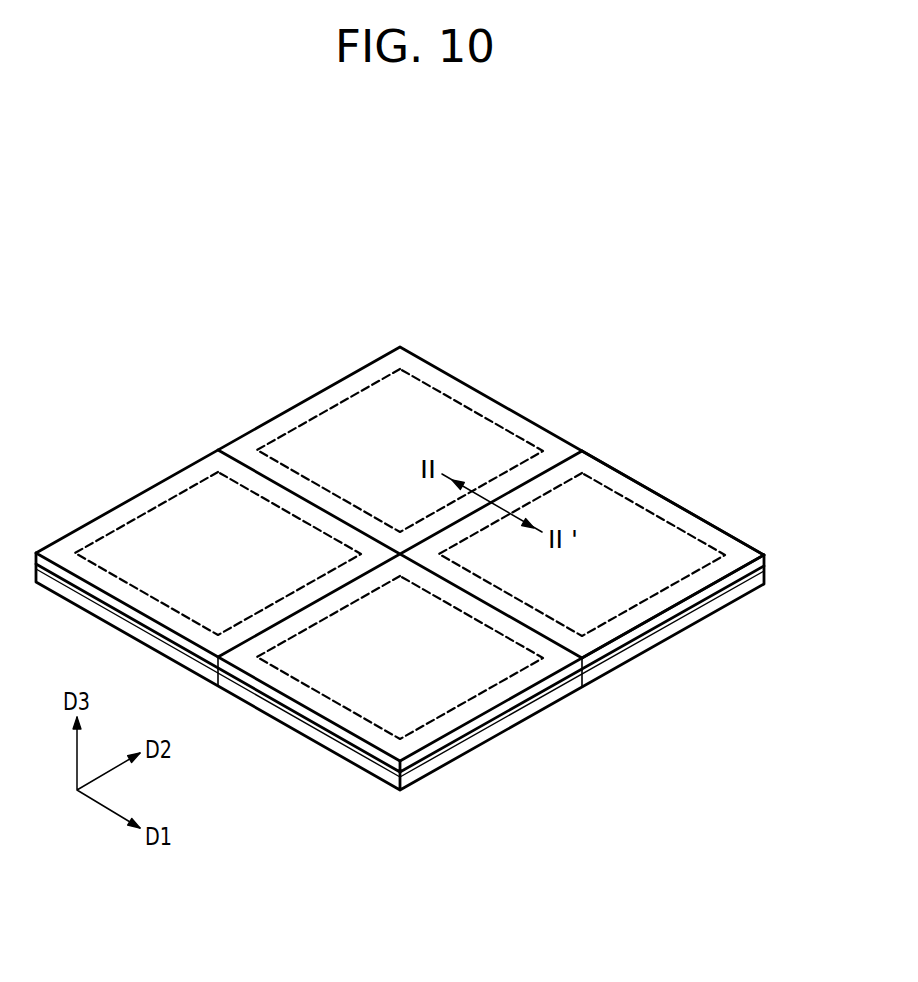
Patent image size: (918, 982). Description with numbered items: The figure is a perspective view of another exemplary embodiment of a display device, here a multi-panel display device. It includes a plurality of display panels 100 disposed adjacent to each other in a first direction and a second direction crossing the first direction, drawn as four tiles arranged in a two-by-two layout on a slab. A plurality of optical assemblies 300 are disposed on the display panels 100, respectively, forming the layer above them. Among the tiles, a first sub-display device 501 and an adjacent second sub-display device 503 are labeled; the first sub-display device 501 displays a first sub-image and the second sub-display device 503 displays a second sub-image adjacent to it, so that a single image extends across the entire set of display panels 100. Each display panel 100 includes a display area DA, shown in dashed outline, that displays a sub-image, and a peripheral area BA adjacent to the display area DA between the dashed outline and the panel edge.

The display panel 100 is at (443, 760).
The optical assembly 300 is at (495, 717).
The first sub-display device 501 is at (457, 425).
The second sub-display device 503 is at (594, 530).
The peripheral area BA is at (670, 513).
The display area DA is at (708, 552).